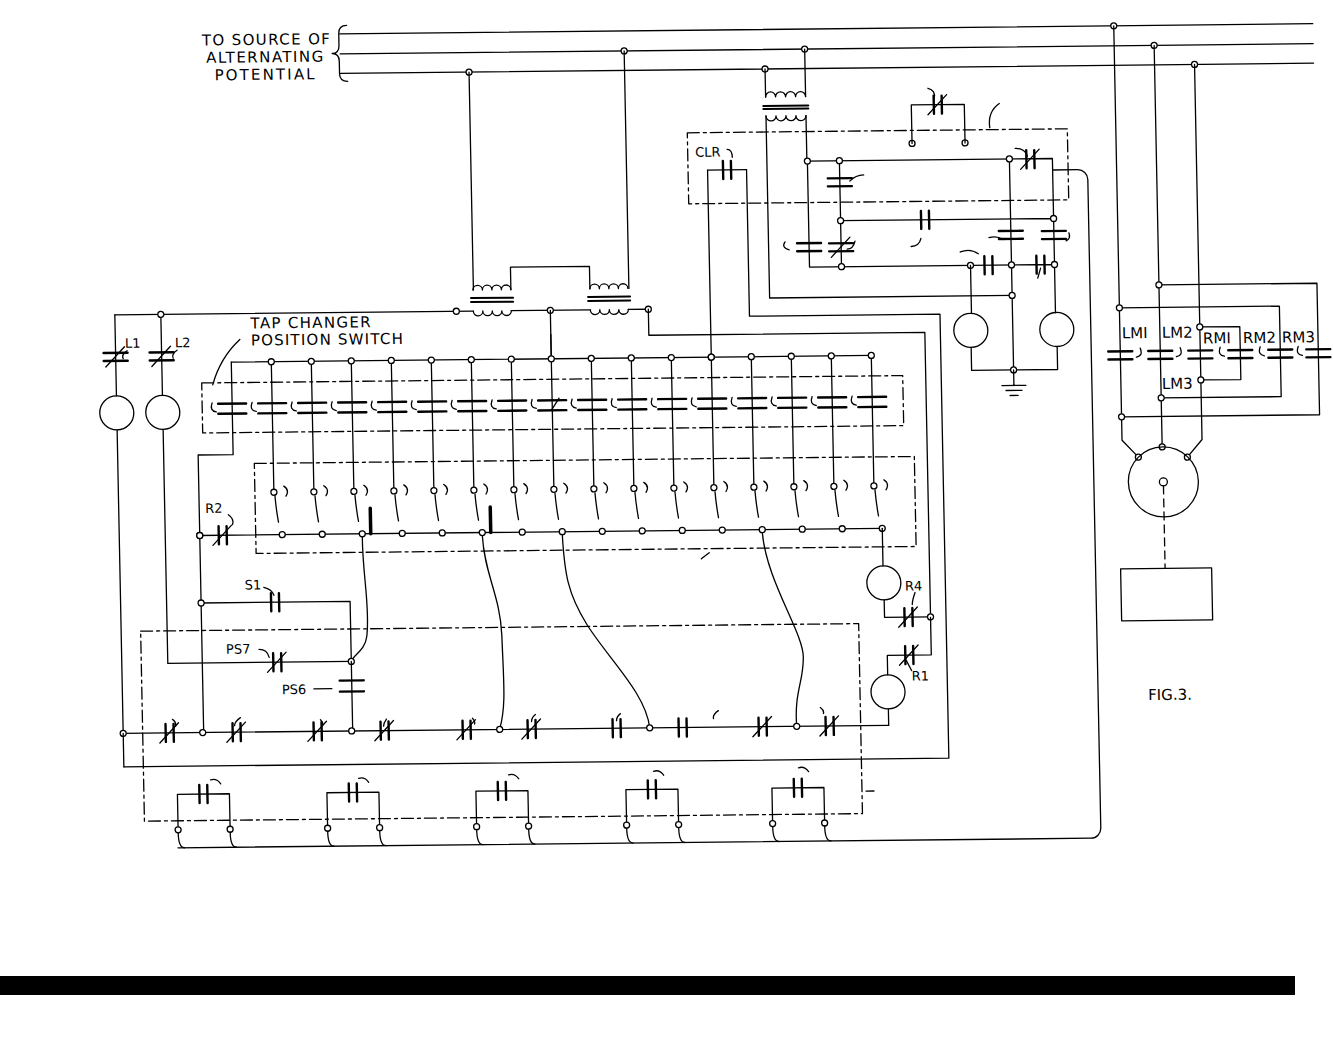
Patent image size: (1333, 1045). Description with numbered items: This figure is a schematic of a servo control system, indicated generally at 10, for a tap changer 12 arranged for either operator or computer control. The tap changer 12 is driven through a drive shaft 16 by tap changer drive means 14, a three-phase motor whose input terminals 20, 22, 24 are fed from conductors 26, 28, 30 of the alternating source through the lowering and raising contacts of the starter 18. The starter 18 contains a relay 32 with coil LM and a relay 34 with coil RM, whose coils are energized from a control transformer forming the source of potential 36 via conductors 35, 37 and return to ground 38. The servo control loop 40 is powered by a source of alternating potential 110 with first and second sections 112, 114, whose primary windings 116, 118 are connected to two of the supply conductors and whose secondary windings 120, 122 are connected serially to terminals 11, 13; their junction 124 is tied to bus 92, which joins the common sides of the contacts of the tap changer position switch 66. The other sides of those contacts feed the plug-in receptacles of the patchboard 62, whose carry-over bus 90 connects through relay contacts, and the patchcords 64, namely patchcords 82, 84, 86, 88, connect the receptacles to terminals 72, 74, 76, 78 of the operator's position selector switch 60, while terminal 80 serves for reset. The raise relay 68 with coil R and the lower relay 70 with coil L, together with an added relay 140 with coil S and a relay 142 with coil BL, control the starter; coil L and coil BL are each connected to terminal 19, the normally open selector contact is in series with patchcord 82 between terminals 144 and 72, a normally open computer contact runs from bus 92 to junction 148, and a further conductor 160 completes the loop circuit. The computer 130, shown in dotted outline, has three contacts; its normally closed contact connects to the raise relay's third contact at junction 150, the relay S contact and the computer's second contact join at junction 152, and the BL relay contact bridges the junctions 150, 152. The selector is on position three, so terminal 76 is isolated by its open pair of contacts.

The electrical conductor 26 is at (978, 37).
The electrical conductor 28 is at (978, 57).
The electrical conductor 30 is at (978, 79).
The source of potential 36 is at (758, 124).
The conductor 37 is at (762, 137).
The conductor 35 is at (804, 137).
The computer 130 is at (896, 224).
The junction 150 is at (1048, 229).
The junction 152 is at (834, 235).
The relay 32 is at (969, 326).
The relay 34 is at (1052, 328).
The starter 18 is at (1034, 373).
The ground 38 is at (907, 396).
The primary winding 116 is at (484, 292).
The primary winding 118 is at (596, 292).
The source of alternating potential 110 is at (571, 293).
The first section 112 is at (484, 204).
The second section 114 is at (619, 193).
The junction 124 is at (545, 312).
The secondary winding 120 is at (492, 327).
The secondary winding 122 is at (603, 328).
The terminal 11 is at (449, 318).
The terminal 13 is at (644, 314).
The servo control loop 40 is at (576, 363).
The bus 92 is at (403, 365).
The tap changer position switch 66 is at (551, 534).
The relay 140 is at (155, 388).
The raise relay 68 is at (127, 436).
The carry-over bus 90 is at (281, 544).
The patchboard 62 is at (555, 518).
The patchcord 82 is at (349, 590).
The patchcord 84 is at (483, 590).
The patchcords 64 is at (560, 631).
The patchcord 86 is at (563, 586).
The patchcord 88 is at (762, 573).
The relay 142 is at (867, 582).
The terminal 19 is at (922, 624).
The control circuit 10 is at (997, 639).
The terminal 144 is at (332, 661).
The terminal 72 is at (332, 732).
The terminal 74 is at (480, 732).
The terminal 76 is at (636, 733).
The terminal 78 is at (780, 730).
The terminal 80 is at (200, 730).
The lower relay 70 is at (898, 703).
The conductor 160 is at (935, 756).
The junction 148 is at (106, 740).
The operator's position selector switch 60 is at (537, 736).
The input terminal 20 is at (1126, 476).
The input terminal 22 is at (1150, 460).
The input terminal 24 is at (1182, 476).
The tap changer drive means 14 is at (1188, 506).
The drive shaft 16 is at (1156, 548).
The tap changer 12 is at (1188, 581).